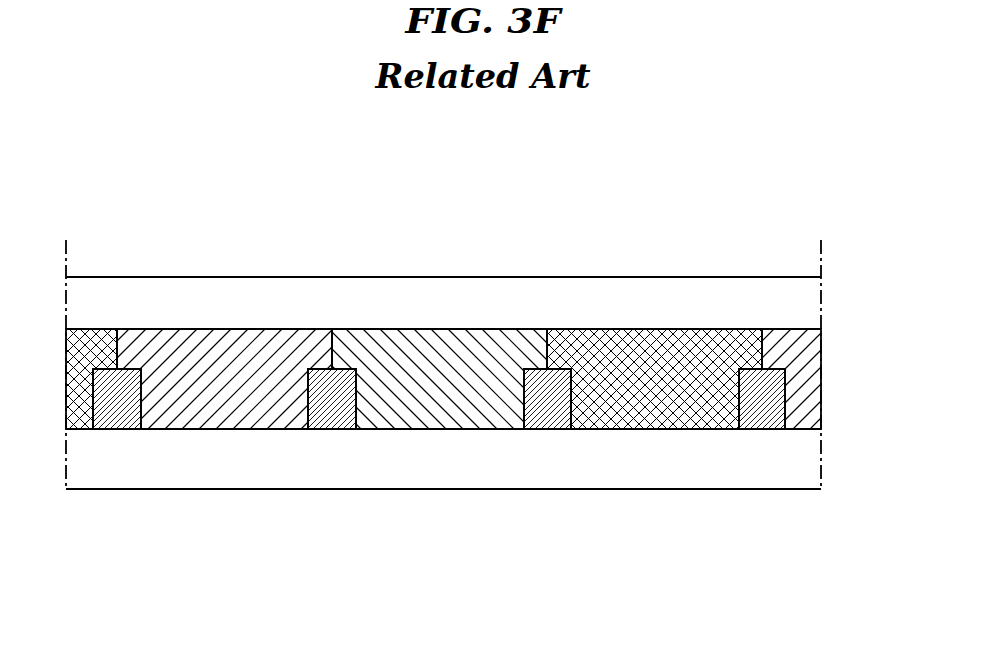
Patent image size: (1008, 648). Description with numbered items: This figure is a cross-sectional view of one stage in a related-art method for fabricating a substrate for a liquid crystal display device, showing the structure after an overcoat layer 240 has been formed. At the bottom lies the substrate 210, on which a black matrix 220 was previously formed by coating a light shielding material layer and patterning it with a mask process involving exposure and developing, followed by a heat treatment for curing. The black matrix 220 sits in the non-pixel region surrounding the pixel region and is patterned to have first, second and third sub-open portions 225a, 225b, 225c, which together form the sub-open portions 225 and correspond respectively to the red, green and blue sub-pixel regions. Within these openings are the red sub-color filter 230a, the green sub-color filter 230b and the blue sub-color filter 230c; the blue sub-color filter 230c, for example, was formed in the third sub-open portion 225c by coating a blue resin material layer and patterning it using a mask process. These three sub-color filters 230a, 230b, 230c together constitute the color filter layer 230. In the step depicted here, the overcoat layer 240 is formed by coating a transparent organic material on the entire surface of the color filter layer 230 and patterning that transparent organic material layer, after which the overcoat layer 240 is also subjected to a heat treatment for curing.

The substrate 210 is at (467, 473).
The black matrix 220 is at (787, 408).
The sub-open portions 225 is at (440, 509).
The first sub-open portion 225a is at (217, 427).
The second sub-open portion 225b is at (428, 427).
The third sub-open portion 225c is at (655, 479).
The color filter layer 230 is at (439, 299).
The red sub-color filter 230a is at (221, 338).
The green sub-color filter 230b is at (437, 343).
The blue sub-color filter 230c is at (654, 332).
The overcoat layer 240 is at (806, 302).